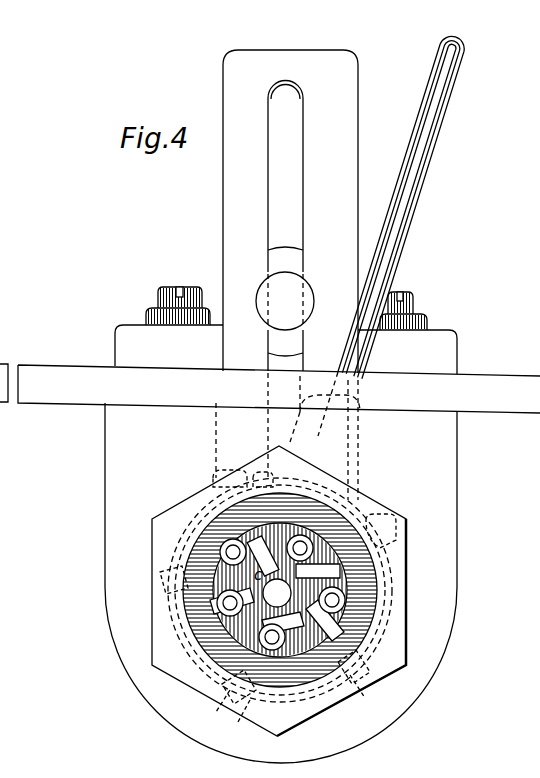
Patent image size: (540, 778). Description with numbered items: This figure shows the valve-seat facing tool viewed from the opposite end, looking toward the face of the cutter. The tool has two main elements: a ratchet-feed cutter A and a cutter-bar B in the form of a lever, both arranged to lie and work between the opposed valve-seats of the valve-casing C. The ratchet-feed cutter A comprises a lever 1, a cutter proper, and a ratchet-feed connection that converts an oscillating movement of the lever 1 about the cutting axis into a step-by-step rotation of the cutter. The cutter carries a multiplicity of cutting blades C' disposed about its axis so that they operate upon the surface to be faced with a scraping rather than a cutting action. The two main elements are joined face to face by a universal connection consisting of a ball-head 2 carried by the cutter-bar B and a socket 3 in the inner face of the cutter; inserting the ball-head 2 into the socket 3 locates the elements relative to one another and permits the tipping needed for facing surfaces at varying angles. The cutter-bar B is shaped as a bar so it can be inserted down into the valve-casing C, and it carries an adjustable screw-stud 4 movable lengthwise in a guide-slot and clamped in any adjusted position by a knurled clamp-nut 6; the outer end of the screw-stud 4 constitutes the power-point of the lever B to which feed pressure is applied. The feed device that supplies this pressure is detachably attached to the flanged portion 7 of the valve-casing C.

The lever 1 is at (396, 278).
The ball-head 2 is at (345, 574).
The socket 3 is at (277, 593).
The screw-stud 4 is at (285, 301).
The clamp-nut 6 is at (286, 248).
The flanged portion 7 is at (270, 388).
The ratchet-feed cutter A is at (377, 239).
The cutter-bar B is at (277, 211).
The valve-casing C is at (304, 556).
The cutting blades C' is at (286, 553).